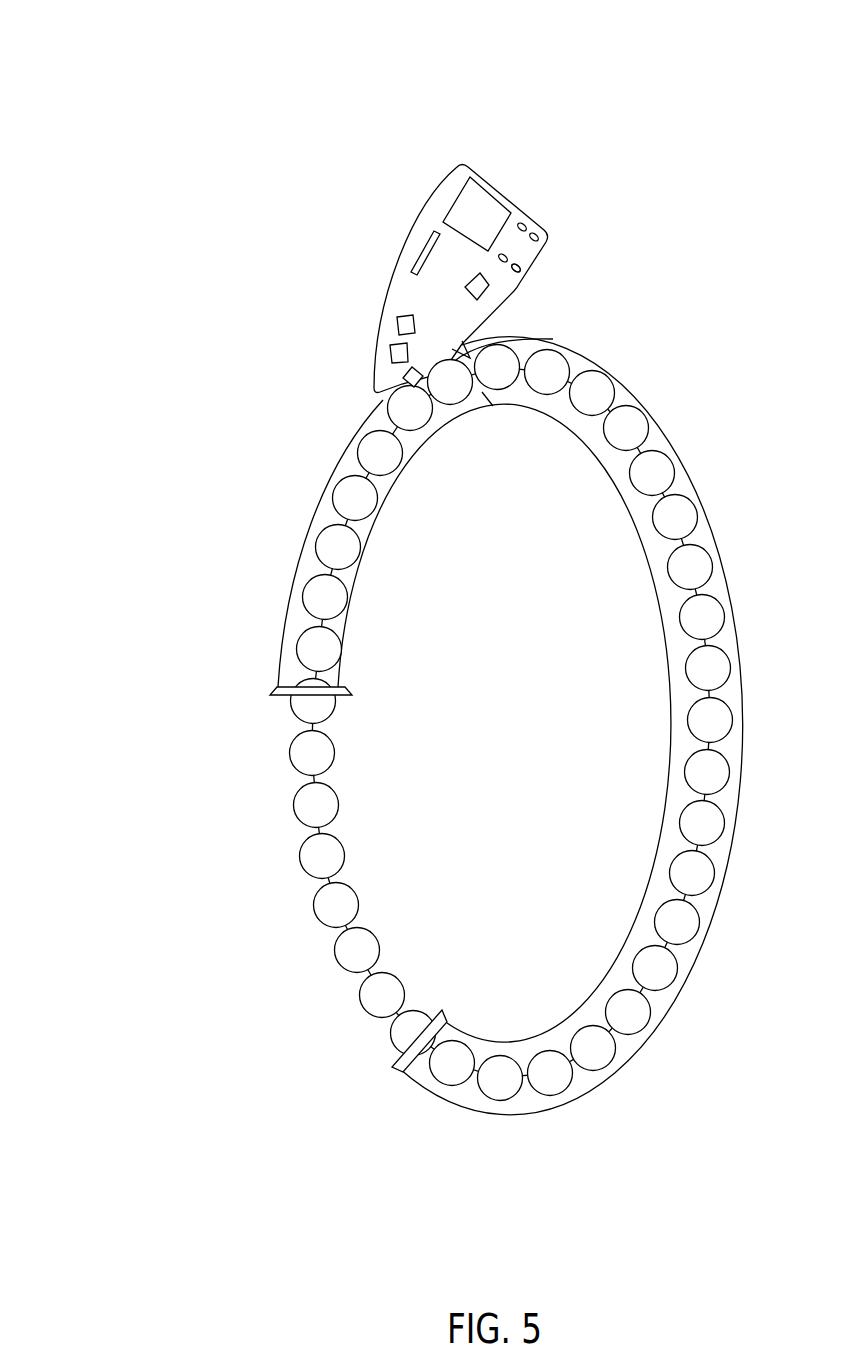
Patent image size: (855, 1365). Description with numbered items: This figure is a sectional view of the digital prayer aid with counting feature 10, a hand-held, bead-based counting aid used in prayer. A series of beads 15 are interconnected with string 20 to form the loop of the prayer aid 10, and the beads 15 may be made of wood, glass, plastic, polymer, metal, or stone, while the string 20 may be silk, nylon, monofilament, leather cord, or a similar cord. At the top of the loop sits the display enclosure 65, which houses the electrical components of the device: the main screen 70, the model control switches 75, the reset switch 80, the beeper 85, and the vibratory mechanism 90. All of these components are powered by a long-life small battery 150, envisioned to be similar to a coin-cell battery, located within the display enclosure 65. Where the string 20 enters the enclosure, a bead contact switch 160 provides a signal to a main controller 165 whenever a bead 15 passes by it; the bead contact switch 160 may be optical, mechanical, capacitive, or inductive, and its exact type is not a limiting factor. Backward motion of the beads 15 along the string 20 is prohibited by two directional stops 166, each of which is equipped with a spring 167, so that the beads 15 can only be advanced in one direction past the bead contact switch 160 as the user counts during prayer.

The digital prayer aid with counting feature 10 is at (114, 170).
The beads 15 is at (610, 380).
The string 20 is at (607, 410).
The display enclosure 65 is at (392, 290).
The main screen 70 is at (482, 196).
The model control switches 75 is at (527, 222).
The reset switch 80 is at (520, 272).
The beeper 85 is at (475, 274).
The vibratory mechanism 90 is at (392, 353).
The long-life small battery 150 is at (427, 236).
The bead contact switch 160 is at (403, 380).
The main controller 165 is at (398, 325).
The directional stops 166 is at (470, 358).
The spring 167 is at (463, 342).